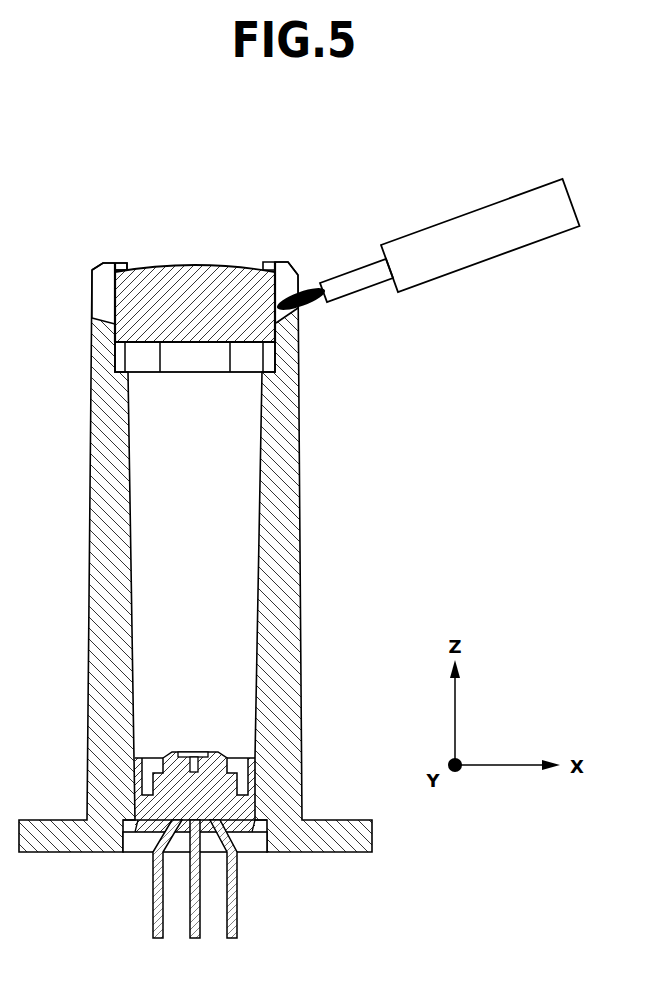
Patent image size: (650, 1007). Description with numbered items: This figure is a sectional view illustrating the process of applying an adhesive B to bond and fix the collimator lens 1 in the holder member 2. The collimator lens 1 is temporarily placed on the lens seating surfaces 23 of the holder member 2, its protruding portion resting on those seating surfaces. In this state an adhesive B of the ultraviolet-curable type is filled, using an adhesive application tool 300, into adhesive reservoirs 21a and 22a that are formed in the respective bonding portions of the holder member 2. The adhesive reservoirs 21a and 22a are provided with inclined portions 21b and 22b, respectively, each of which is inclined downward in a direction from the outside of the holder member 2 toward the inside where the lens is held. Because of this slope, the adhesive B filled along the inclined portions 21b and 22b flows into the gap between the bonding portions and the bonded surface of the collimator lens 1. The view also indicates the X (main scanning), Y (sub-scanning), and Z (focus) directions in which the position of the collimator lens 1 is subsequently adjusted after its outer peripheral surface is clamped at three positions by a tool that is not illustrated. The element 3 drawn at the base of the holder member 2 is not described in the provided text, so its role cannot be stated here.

The collimator lens 1 is at (162, 212).
The holder member 2 is at (300, 487).
The stem 3 is at (167, 791).
The adhesive reservoir 21a is at (102, 273).
The inclined portion 21b is at (105, 313).
The adhesive reservoir 22a is at (283, 269).
The inclined portion 22b is at (275, 312).
The lens seating surface 23 is at (193, 346).
The adhesive application tool 300 is at (462, 233).
The adhesive B is at (305, 312).